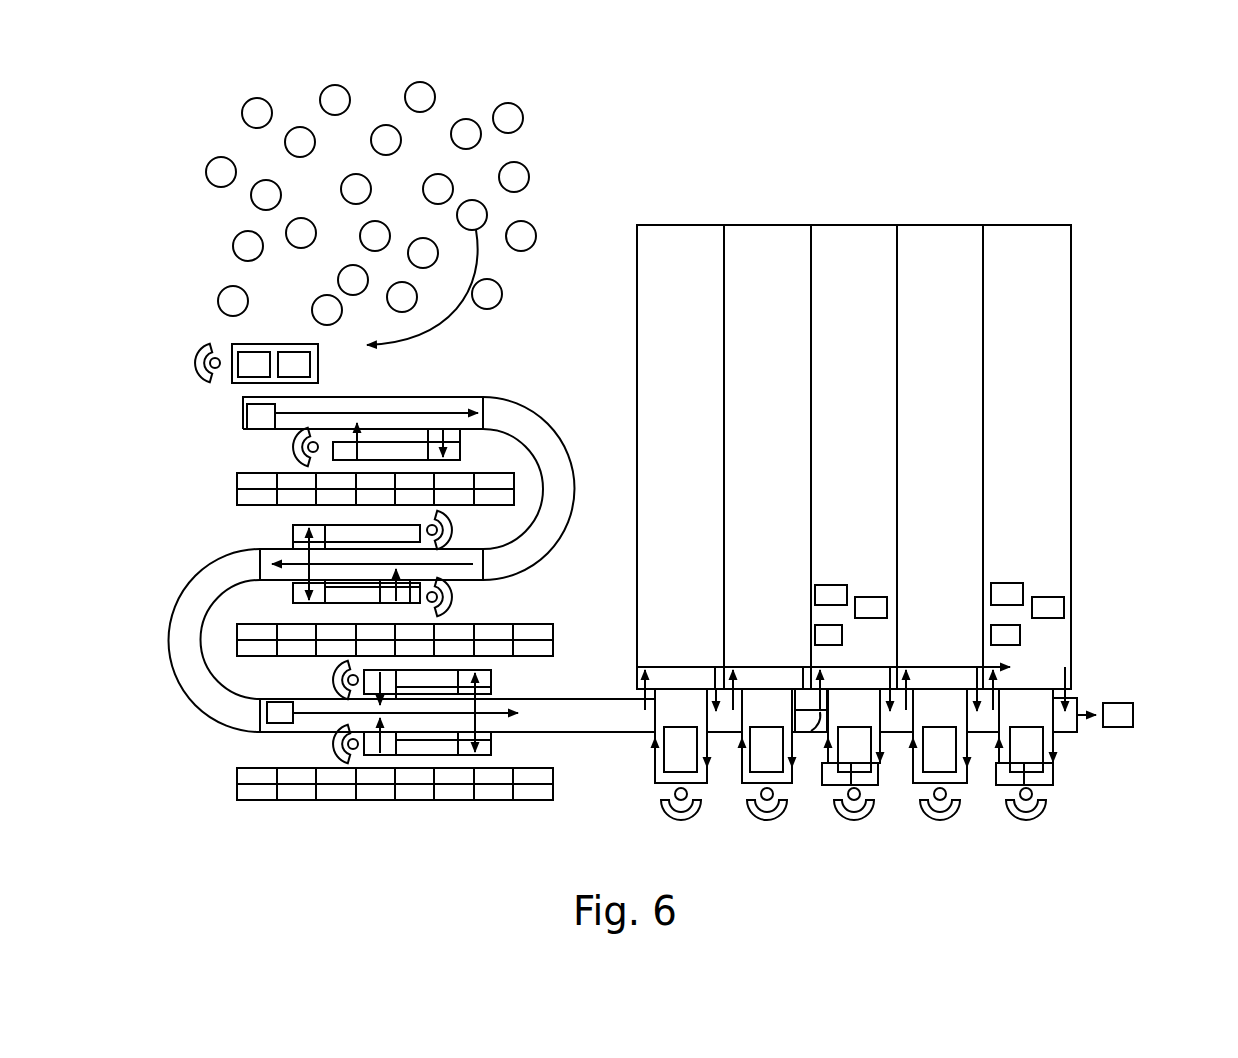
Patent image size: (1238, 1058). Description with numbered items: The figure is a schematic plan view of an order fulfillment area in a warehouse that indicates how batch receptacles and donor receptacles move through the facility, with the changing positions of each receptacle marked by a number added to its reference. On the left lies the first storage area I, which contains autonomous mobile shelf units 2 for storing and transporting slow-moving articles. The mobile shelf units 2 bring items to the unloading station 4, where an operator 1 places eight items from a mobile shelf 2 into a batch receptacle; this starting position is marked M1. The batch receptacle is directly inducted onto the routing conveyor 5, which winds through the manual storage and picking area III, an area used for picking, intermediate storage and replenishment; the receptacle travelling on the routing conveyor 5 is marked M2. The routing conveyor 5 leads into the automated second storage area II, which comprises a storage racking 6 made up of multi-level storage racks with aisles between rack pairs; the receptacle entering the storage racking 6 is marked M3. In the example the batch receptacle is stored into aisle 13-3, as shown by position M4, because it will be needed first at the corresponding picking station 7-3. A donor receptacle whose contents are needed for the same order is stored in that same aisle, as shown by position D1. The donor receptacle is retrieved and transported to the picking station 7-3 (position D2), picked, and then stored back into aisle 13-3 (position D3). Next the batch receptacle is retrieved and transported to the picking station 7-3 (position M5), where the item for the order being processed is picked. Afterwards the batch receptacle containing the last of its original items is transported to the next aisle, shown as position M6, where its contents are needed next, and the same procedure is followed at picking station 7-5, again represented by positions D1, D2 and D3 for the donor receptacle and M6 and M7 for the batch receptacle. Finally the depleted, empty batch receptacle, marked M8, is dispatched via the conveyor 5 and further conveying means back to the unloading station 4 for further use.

The first storage area I is at (182, 158).
The mobile shelf unit 2 is at (420, 97).
The operator 1 is at (180, 360).
The unloading station 4 is at (327, 378).
The manual storage and picking area III is at (183, 530).
The routing conveyor 5 is at (180, 593).
The batch receptacle at start position M1 is at (247, 415).
The batch receptacle on routing conveyor M2 is at (268, 712).
The automated second storage area II is at (1093, 255).
The storage racking 6 is at (1052, 320).
The aisle no. 3 13-3 is at (849, 250).
The donor receptacle stored back into aisle D3 is at (1017, 542).
The donor receptacle stored in aisle D1 is at (1055, 557).
The donor receptacle at picking station D2 is at (878, 777).
The batch receptacle entering storage racking M3 is at (818, 713).
The batch receptacle stored in aisle no. 3 M4 is at (815, 633).
The batch receptacle at picking station 7-3 M5 is at (833, 786).
The batch receptacle transported to aisle 13-5 M6 is at (991, 633).
The batch receptacle at picking station 7-5 M7 is at (1003, 786).
The depleted batch receptacle M8 is at (1118, 712).
The picking station 7-3 is at (836, 823).
The picking station 7-5 is at (1044, 823).